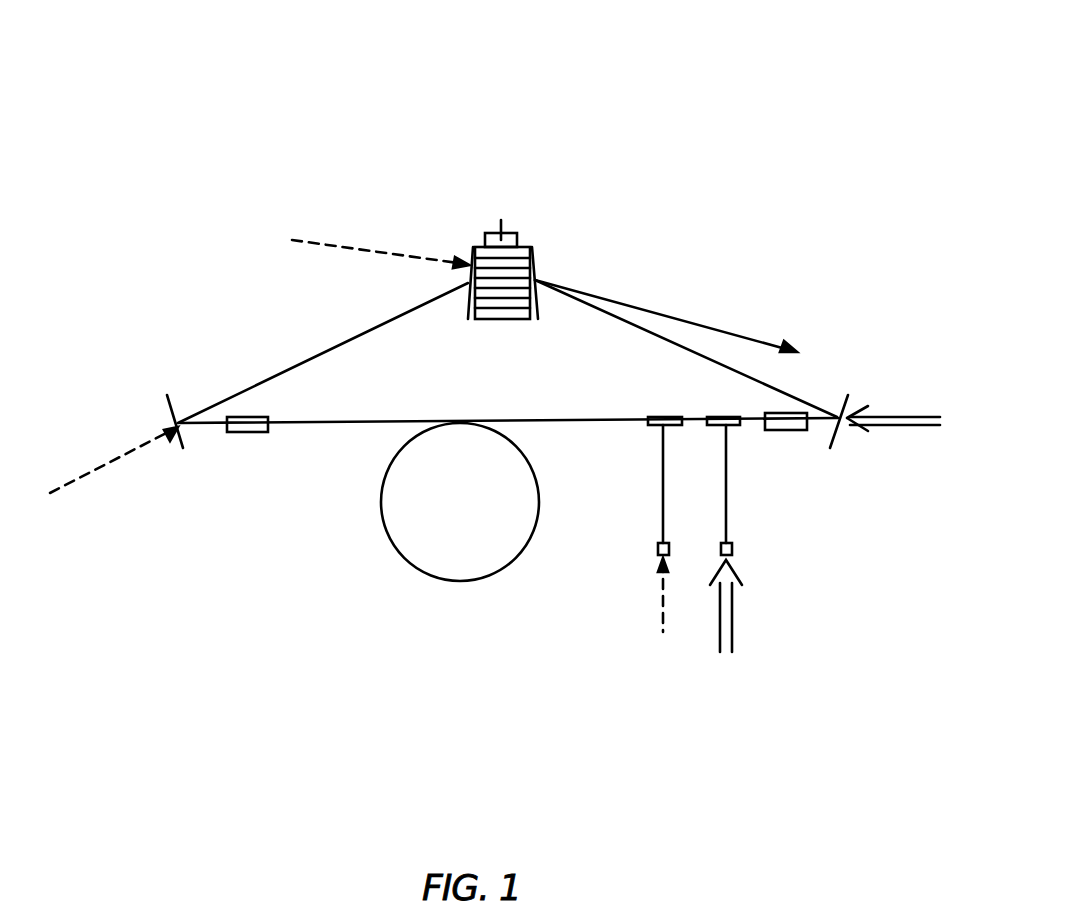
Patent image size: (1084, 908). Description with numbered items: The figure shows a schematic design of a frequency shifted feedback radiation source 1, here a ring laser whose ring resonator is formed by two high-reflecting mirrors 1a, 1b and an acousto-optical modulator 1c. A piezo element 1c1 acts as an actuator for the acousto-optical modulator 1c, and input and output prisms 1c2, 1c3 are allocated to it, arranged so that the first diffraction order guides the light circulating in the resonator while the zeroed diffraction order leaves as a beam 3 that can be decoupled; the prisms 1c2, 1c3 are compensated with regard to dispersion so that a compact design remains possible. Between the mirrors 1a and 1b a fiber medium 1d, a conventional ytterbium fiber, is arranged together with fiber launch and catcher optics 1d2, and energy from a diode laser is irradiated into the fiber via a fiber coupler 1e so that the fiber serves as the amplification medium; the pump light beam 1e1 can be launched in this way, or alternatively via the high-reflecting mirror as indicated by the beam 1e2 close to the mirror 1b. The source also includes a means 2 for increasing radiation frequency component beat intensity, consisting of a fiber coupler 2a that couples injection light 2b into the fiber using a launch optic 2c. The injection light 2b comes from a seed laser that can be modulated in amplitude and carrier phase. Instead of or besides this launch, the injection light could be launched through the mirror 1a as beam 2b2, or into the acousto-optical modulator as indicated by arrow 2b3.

The frequency shifted feedback radiation source 1 is at (570, 116).
The high reflecting mirror 1a is at (180, 447).
The high reflecting mirror 1b is at (850, 400).
The acousto-optical modulator 1c is at (526, 278).
The piezo element 1c1 is at (500, 237).
The input prism 1c2 is at (458, 308).
The output prism 1c3 is at (535, 310).
The fiber medium 1d is at (390, 543).
The fiber launch and catcher optics 1d2 is at (248, 425).
The fiber coupler 1e is at (727, 478).
The pump light beam 1e1 is at (735, 628).
The pump light beam 1e2 is at (905, 428).
The means for increasing radiation frequency component beat intensity 2 is at (519, 690).
The fiber coupler 2a is at (648, 425).
The injection light 2b is at (662, 632).
The injection light beam 2b2 is at (85, 466).
The injection light arrow 2b3 is at (310, 238).
The launch optic 2c is at (658, 550).
The beam 3 is at (711, 325).